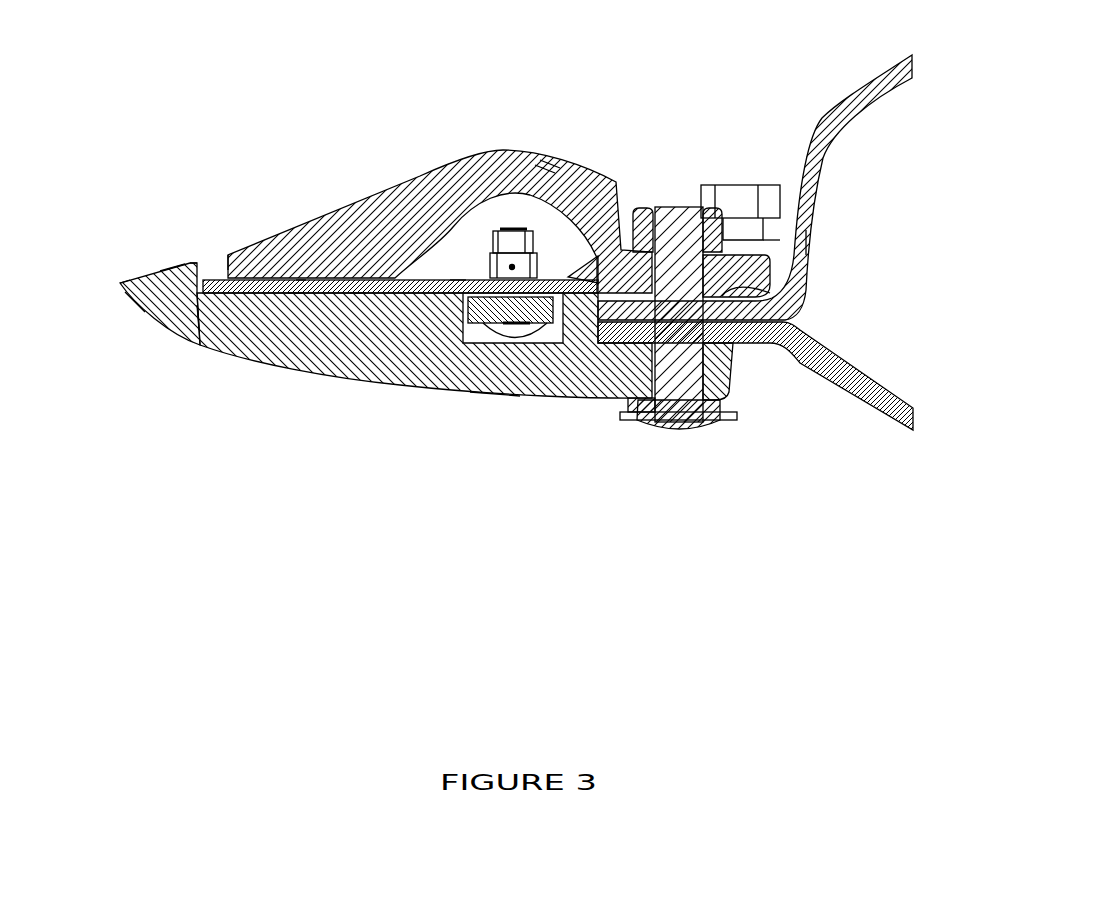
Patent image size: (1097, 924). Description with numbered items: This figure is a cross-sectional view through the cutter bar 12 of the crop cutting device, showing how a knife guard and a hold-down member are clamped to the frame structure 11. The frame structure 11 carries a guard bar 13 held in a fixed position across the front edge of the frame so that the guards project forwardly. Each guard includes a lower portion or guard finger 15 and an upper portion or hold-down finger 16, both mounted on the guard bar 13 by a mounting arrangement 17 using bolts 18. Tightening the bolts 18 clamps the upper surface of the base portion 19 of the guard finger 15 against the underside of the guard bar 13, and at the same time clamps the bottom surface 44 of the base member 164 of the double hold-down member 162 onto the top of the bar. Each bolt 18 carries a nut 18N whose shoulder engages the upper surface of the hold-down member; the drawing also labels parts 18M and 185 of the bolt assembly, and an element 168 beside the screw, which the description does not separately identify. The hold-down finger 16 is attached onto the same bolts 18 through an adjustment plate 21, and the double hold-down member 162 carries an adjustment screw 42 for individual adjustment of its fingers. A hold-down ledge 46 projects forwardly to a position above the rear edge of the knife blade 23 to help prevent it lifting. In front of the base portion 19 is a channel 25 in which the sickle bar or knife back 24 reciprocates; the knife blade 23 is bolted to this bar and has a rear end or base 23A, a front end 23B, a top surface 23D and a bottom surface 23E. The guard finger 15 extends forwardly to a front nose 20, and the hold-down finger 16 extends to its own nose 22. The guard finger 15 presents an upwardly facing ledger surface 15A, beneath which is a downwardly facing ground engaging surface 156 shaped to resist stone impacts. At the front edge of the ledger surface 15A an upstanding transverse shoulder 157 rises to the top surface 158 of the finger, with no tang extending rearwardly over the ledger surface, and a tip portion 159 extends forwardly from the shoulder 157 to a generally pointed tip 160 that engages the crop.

The frame structure 11 is at (880, 45).
The cutter bar 12 is at (785, 132).
The guard bar 13 is at (405, 410).
The guard finger 15 is at (265, 365).
The ledger surface 15A is at (357, 298).
The hold-down finger 16 is at (363, 203).
The mounting arrangement 17 is at (663, 150).
The bolt 18 is at (688, 412).
The nut 18N is at (637, 213).
The bolt lower nut 18M is at (713, 408).
The washer 185 is at (655, 208).
The base portion 19 is at (623, 415).
The front nose 20 is at (147, 318).
The adjustment plate 21 is at (770, 268).
The nose 22 is at (229, 253).
The knife blade 23 is at (310, 276).
The rear end or base 23A is at (473, 243).
The front end 23B is at (200, 318).
The top surface 23D is at (300, 276).
The bottom surface 23E is at (295, 298).
The sickle bar 24 is at (483, 320).
The channel 25 is at (558, 336).
The adjustment screw 42 is at (737, 157).
The bottom surface 44 is at (735, 289).
The hold-down ledge 46 is at (545, 170).
The ground engaging surface 156 is at (493, 398).
The transverse shoulder 157 is at (198, 262).
The top surface 158 is at (180, 263).
The tip portion 159 is at (113, 295).
The pointed tip 160 is at (122, 283).
The double hold-down member 162 is at (553, 133).
The base member 164 is at (770, 242).
The nut contact surface 168 is at (770, 250).